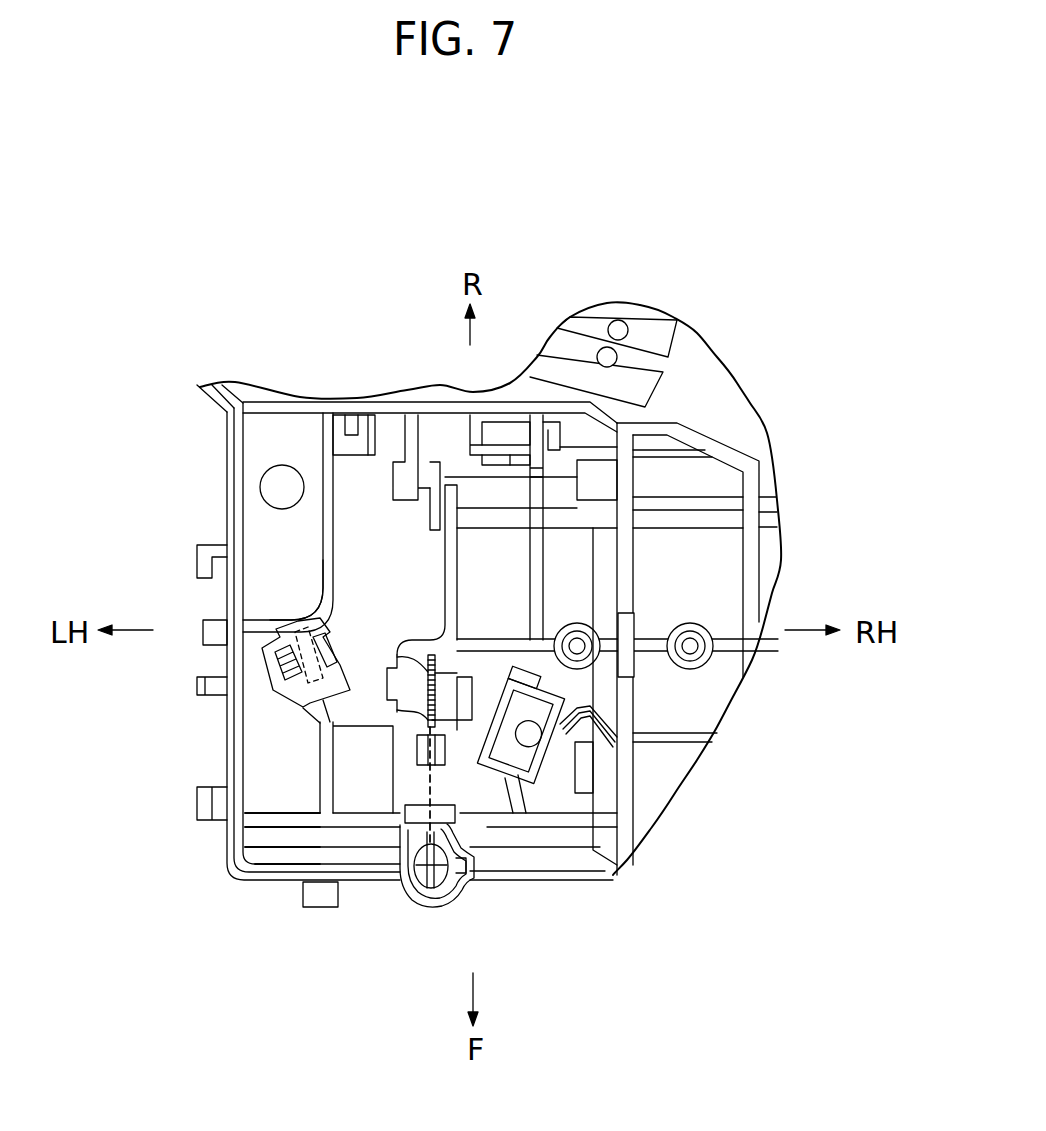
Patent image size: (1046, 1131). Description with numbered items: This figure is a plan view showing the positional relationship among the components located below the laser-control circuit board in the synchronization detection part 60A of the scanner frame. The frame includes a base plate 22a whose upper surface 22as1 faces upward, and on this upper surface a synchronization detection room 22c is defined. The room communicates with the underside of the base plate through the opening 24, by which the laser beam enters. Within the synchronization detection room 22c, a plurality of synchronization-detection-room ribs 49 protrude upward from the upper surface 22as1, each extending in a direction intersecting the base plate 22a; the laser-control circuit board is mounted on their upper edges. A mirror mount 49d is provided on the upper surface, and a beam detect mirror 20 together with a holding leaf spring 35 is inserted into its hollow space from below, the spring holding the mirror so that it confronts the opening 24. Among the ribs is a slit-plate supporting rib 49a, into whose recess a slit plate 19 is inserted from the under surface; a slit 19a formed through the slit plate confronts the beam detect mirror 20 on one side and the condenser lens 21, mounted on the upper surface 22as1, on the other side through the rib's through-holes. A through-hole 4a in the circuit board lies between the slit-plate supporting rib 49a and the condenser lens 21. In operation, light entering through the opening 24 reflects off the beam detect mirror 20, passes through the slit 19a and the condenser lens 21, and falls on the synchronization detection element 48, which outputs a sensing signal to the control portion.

The synchronization-detection-room ribs 49 is at (447, 575).
The opening 24 is at (425, 438).
The beam detect mirror 20 is at (323, 593).
The holding leaf spring 35 is at (262, 650).
The mirror mount 49d is at (273, 690).
The slit 19a is at (413, 693).
The synchronization detection room 22c is at (267, 793).
The synchronization detection part 60A is at (186, 843).
The base plate 22a is at (273, 805).
The upper surface 22as1 is at (202, 908).
The slit-plate supporting rib 49a is at (407, 773).
The slit plate 19 is at (423, 876).
The through-hole 4a is at (467, 760).
The condenser lens 21 is at (507, 770).
The synchronization detection element 48 is at (560, 770).